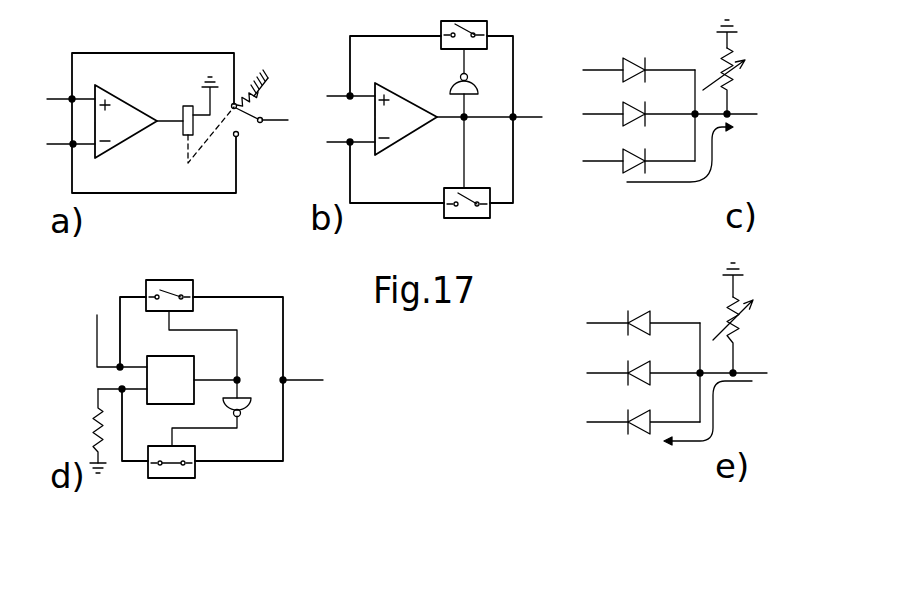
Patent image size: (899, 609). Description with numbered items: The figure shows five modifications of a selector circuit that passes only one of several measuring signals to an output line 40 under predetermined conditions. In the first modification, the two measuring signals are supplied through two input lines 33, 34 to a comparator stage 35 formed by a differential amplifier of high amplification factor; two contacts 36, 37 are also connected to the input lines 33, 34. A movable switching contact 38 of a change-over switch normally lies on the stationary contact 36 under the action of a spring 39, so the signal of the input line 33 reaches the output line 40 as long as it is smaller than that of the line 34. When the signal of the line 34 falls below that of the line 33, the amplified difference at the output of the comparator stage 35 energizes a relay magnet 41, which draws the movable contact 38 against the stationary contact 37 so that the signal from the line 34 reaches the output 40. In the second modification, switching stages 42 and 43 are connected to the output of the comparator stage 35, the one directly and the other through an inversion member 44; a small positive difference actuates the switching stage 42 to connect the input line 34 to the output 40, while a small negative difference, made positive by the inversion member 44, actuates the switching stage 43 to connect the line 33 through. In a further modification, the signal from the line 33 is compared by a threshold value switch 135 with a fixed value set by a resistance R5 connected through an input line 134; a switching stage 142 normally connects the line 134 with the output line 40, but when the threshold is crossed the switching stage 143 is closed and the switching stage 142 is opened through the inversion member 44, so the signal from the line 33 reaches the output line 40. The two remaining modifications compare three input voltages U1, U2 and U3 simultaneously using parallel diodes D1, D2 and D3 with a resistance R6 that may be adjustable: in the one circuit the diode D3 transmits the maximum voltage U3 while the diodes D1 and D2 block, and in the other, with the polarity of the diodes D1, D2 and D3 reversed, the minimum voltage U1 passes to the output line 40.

The input line 33 is at (49, 98).
The input line 34 is at (49, 147).
The comparator stage 35 is at (120, 99).
The stationary contact 36 is at (235, 103).
The stationary contact 37 is at (239, 137).
The movable switching contact 38 is at (265, 116).
The spring 39 is at (262, 96).
The output line 40 is at (270, 122).
The relay magnet 41 is at (183, 110).
The switching stage 42 is at (452, 188).
The switching stage 43 is at (471, 21).
The inversion member 44 is at (473, 86).
The input line 134 is at (97, 393).
The threshold value switch 135 is at (157, 355).
The switching stage 142 is at (197, 474).
The switching stage 143 is at (180, 280).
The resistance R5 is at (84, 431).
The resistance R6 is at (737, 196).
The diode D1 is at (630, 58).
The diode D2 is at (632, 103).
The diode D3 is at (632, 151).
The input voltage U1 is at (592, 237).
The input voltage U2 is at (592, 236).
The input voltage U3 is at (592, 235).